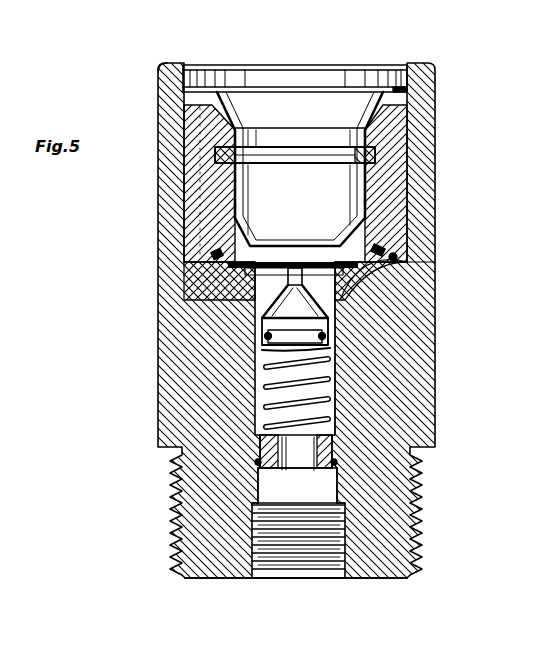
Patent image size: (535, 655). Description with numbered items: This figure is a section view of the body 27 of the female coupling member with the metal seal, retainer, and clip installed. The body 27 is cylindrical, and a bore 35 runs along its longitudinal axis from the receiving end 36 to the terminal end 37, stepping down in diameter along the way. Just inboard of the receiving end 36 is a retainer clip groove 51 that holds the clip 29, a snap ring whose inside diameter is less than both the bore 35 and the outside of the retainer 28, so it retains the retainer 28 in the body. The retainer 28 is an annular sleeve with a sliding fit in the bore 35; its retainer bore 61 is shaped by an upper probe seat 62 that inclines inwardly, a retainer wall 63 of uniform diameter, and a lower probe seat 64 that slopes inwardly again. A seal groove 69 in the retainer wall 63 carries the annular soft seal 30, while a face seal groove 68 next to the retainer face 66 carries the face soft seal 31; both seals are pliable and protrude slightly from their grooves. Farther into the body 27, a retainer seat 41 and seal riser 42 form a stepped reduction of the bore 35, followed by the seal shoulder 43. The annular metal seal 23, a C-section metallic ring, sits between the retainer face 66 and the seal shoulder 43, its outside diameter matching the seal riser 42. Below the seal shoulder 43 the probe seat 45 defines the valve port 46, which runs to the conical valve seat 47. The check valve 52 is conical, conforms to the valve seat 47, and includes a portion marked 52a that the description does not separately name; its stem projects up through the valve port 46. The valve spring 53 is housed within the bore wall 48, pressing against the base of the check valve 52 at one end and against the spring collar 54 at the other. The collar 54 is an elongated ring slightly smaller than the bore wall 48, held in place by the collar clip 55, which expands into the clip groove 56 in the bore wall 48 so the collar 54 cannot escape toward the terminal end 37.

The body 27 is at (150, 233).
The receiving end 36 is at (168, 63).
The bore 35 is at (357, 74).
The retainer clip groove 51 is at (408, 89).
The upper probe seat 62 is at (192, 108).
The clip 29 is at (420, 120).
The retainer wall 63 is at (208, 180).
The retainer bore 61 is at (290, 172).
The seal groove 69 is at (370, 195).
The annular soft seal 30 is at (372, 155).
The lower probe seat 64 is at (385, 250).
The face seal groove 68 is at (397, 257).
The face soft seal 31 is at (418, 263).
The retainer seat 41 is at (400, 270).
The seal riser 42 is at (350, 292).
The retainer 28 is at (205, 237).
The retainer face 66 is at (240, 266).
The annular metal seal 23 is at (286, 273).
The probe seat 45 is at (275, 300).
The valve port 46 is at (262, 322).
The O-ring 52a is at (268, 338).
The seal shoulder 43 is at (330, 320).
The valve seat 47 is at (336, 375).
The valve spring 53 is at (330, 400).
The check valve 52 is at (260, 440).
The bore wall 48 is at (284, 447).
The clip groove 56 is at (338, 464).
The collar clip 55 is at (262, 474).
The spring collar 54 is at (262, 478).
The terminal end 37 is at (392, 580).